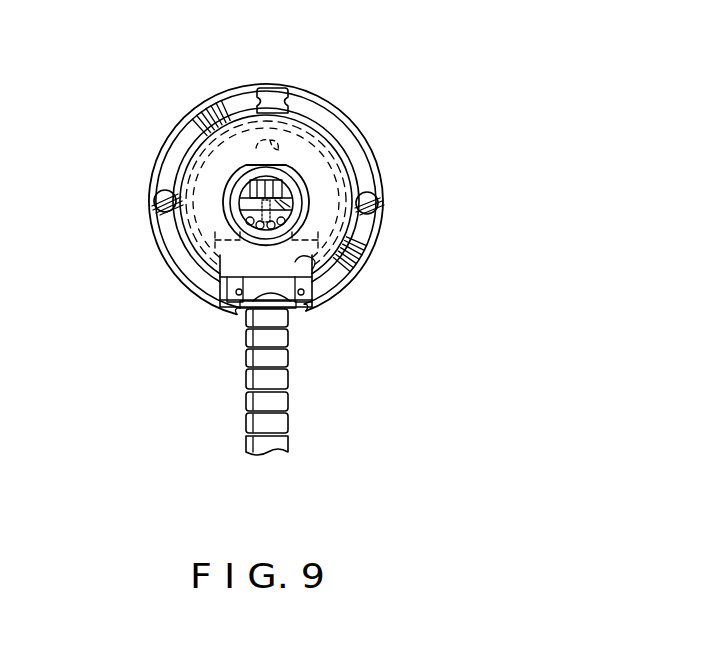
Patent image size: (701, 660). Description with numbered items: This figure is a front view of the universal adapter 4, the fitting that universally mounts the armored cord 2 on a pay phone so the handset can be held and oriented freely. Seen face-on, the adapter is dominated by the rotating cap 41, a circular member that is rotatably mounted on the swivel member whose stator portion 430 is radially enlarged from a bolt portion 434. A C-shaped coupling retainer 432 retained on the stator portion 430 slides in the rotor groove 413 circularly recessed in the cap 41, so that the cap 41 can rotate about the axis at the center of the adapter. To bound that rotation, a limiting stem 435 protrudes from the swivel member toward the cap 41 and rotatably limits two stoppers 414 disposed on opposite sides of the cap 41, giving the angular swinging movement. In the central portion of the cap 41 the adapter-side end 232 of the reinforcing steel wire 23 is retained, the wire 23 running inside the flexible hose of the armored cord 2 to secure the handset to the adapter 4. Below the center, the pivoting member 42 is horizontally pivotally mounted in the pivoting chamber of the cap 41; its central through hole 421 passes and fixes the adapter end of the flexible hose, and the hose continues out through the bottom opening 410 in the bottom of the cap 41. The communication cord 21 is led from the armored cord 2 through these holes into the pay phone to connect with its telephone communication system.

The armored cord 2 is at (238, 424).
The universal adapter 4 is at (212, 80).
The communication cord 21 is at (225, 270).
The reinforcing steel wire 23 is at (243, 209).
The rotating cap 41 is at (324, 95).
The pivoting member 42 is at (304, 308).
The adapter-side end 232 is at (248, 185).
The bottom opening 410 is at (243, 318).
The rotor groove 413 is at (378, 150).
The stoppers 414 is at (152, 232).
The central through hole 421 is at (293, 310).
The stator portion 430 is at (345, 188).
The C-shaped coupling retainer 432 is at (318, 262).
The bolt portion 434 is at (282, 167).
The limiting stem 435 is at (287, 114).